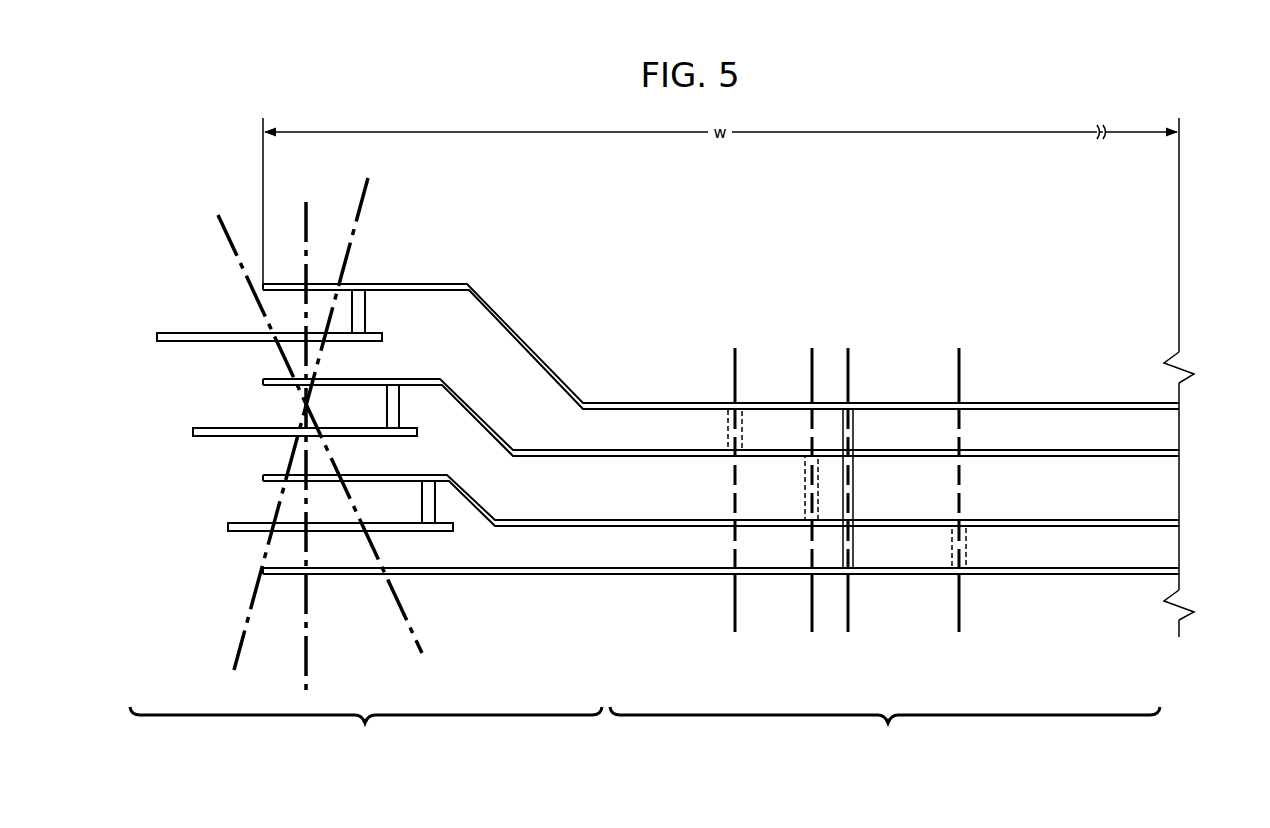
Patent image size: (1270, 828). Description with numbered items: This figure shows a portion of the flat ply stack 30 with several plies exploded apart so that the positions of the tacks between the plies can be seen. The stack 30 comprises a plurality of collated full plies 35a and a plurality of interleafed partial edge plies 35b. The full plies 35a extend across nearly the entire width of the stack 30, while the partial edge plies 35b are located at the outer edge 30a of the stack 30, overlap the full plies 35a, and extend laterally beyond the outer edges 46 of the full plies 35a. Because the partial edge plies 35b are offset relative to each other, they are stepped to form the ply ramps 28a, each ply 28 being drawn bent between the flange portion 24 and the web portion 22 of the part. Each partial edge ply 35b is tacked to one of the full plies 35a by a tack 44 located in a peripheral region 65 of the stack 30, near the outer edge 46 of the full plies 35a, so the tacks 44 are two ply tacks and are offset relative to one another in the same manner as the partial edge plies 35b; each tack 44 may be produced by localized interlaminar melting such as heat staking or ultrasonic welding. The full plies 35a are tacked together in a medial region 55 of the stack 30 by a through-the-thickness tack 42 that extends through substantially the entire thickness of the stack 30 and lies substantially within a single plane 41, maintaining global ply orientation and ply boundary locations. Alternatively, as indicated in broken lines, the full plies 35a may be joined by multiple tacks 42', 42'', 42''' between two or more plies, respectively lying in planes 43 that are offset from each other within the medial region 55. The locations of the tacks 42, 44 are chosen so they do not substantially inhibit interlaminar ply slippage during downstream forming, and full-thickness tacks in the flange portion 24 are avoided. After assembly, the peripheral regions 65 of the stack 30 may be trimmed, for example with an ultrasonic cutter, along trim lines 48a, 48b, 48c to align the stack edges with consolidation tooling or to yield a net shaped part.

The web portion 22 is at (885, 732).
The flange portion 24 is at (366, 732).
The ply 28 is at (580, 364).
The ply ramp 28a is at (221, 178).
The flat ply stack 30 is at (984, 227).
The outer edge 30a is at (279, 637).
The full ply 35a is at (1053, 401).
The partial edge ply 35b is at (198, 333).
The single plane 41 is at (850, 372).
The through-the-thickness tack 42 is at (882, 488).
The tack 42' is at (700, 429).
The tack 42'' is at (737, 488).
The tack 42''' is at (1001, 547).
The plane 43 is at (733, 604).
The tack 44 is at (366, 311).
The outer edge 46 is at (449, 269).
The trim line 48a is at (223, 229).
The trim line 48b is at (308, 208).
The trim line 48c is at (351, 243).
The medial region 55 is at (880, 299).
The peripheral region 65 is at (384, 199).